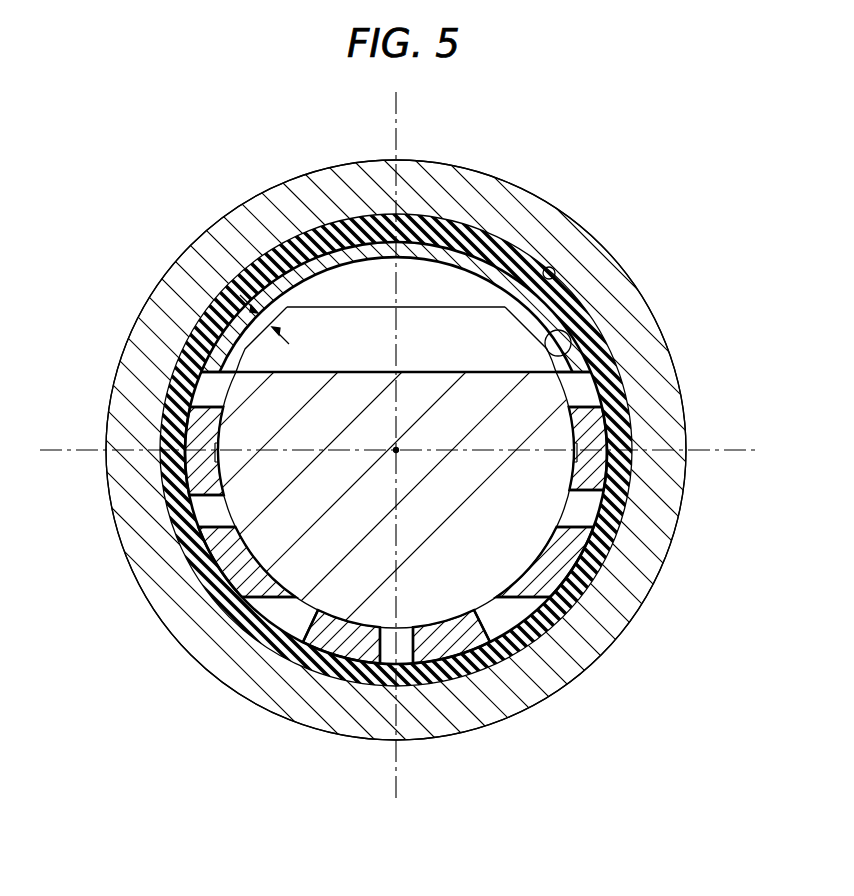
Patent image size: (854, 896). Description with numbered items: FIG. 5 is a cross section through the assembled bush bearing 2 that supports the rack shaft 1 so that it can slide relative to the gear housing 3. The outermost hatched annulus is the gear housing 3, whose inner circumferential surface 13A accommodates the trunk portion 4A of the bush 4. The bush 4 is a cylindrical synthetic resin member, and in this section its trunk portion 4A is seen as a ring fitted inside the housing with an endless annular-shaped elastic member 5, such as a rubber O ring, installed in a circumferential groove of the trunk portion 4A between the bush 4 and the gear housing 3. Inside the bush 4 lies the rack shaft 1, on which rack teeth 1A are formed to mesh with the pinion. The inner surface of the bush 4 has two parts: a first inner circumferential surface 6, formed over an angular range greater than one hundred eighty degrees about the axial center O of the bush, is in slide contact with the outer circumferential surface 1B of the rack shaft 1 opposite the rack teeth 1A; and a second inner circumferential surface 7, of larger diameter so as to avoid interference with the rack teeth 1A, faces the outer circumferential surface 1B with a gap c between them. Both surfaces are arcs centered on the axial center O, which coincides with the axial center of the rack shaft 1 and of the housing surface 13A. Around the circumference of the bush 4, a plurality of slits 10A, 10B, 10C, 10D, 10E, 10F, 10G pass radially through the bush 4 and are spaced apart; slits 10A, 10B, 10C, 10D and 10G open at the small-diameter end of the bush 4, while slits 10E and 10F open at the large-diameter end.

The bush bearing 2 is at (243, 171).
The gear housing 3 is at (343, 180).
The endless annular-shaped elastic member 5 is at (414, 226).
The trunk portion 4A is at (393, 278).
The bush 4 is at (543, 262).
The inner circumferential surface 13A is at (556, 270).
The second inner circumferential surface 7 is at (571, 342).
The rack shaft 1 is at (427, 450).
The rack teeth 1A is at (445, 305).
The outer circumferential surface 1B is at (606, 472).
The first inner circumferential surface 6 is at (568, 553).
The slit 10A is at (190, 395).
The slit 10B is at (188, 518).
The slit 10C is at (600, 383).
The slit 10D is at (615, 525).
The slit 10E is at (268, 610).
The slit 10F is at (548, 620).
The slit 10G is at (388, 662).
The gap c is at (245, 300).
The axial center of the bush O is at (398, 452).